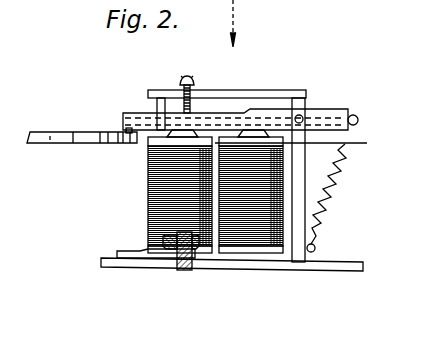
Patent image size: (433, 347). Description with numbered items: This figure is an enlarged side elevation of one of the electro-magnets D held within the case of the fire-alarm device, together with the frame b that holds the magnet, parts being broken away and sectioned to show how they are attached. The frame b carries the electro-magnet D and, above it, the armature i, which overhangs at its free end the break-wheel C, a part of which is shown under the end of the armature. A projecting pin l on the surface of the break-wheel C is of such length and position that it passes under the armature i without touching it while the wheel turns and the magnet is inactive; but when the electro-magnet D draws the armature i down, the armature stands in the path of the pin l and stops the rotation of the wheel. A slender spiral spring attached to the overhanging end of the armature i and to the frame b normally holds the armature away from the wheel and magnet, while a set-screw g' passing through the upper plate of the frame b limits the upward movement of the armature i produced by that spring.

The break-wheel C is at (82, 127).
The projecting pin l is at (126, 129).
The set-screw g' is at (179, 89).
The electro-magnet D is at (227, 79).
The armature i is at (240, 119).
The frame b is at (291, 162).